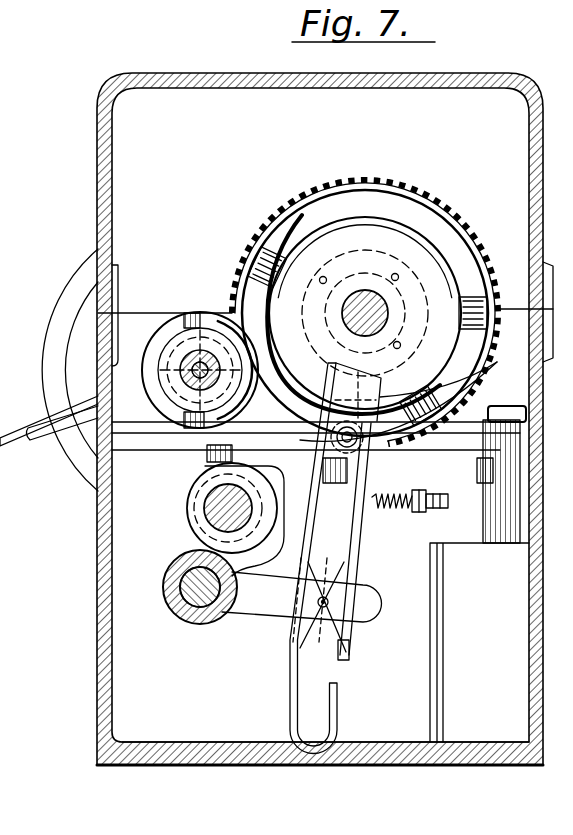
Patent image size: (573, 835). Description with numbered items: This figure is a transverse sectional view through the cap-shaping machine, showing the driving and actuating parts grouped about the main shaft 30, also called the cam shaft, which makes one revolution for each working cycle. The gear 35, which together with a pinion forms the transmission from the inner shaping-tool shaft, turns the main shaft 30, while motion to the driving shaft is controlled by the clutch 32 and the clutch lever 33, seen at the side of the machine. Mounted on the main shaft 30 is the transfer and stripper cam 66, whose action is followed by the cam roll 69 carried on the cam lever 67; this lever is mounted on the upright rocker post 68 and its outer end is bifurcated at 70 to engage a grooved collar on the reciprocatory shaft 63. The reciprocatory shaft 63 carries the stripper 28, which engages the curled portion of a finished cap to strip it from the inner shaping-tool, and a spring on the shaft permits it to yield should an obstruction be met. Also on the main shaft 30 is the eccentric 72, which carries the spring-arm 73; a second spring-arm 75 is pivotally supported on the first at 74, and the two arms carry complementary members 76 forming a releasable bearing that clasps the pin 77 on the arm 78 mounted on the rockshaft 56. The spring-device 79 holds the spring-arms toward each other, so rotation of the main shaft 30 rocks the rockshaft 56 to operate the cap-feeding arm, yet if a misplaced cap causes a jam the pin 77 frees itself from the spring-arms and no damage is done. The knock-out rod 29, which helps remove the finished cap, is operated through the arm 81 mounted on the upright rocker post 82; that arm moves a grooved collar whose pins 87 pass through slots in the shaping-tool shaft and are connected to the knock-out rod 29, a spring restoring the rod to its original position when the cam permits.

The gear 35 is at (331, 181).
The eccentric 72 is at (388, 236).
The main shaft 30 is at (366, 292).
The transfer and stripper cam 66 is at (262, 292).
The cam roll 69 is at (412, 402).
The upright rocker post 82 is at (487, 412).
The knock-out rod 29 is at (178, 392).
The arm 81 is at (205, 425).
The pins 87 is at (235, 430).
The pivot 74 is at (337, 437).
The cam lever 67 is at (207, 460).
The reciprocatory shaft 63 is at (215, 512).
The bifurcated outer end 70 is at (280, 524).
The second spring-arm 75 is at (358, 537).
The spring-device 79 is at (390, 496).
The upright rocker post 68 is at (480, 447).
The rockshaft 56 is at (185, 600).
The arm 78 is at (262, 608).
The pin 77 is at (330, 602).
The complementary members 76 is at (350, 640).
The spring-arm 73 is at (292, 742).
The clutch lever 33 is at (8, 447).
The stripper 28 is at (49, 420).
The clutch 32 is at (49, 370).